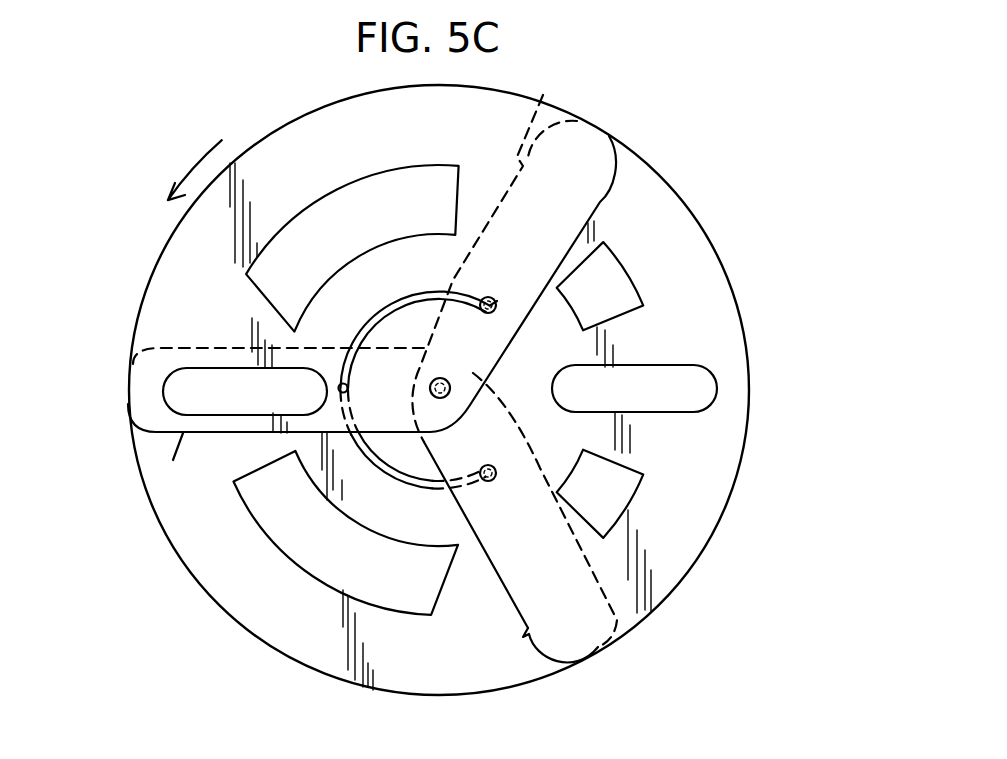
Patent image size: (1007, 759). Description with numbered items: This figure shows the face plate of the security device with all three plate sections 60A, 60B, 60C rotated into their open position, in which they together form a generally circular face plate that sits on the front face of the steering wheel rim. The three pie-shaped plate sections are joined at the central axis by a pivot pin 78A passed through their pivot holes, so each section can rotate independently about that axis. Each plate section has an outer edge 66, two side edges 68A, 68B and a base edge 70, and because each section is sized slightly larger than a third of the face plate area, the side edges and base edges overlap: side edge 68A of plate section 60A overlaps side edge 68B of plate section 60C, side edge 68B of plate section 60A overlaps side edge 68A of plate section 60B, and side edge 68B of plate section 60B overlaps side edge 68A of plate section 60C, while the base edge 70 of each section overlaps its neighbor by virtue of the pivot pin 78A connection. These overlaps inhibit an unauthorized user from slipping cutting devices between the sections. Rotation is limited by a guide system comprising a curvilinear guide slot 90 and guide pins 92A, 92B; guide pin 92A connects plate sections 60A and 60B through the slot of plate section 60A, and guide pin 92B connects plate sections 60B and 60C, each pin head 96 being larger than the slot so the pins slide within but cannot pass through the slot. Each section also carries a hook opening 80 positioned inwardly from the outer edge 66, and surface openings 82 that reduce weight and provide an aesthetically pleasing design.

The outer edge 66 is at (278, 128).
The surface opening 82 is at (378, 190).
The hook opening 80 is at (178, 395).
The guide slot 90 is at (398, 300).
The pin head 96 is at (496, 311).
The guide pin 92A is at (504, 290).
The guide pin 92B is at (504, 490).
The pivot pin 78A is at (447, 381).
The side edge 68A is at (546, 98).
The side edge 68B is at (602, 203).
The base edge 70 is at (500, 410).
The plate section 60A is at (145, 264).
The plate section 60B is at (742, 307).
The plate section 60C is at (392, 698).